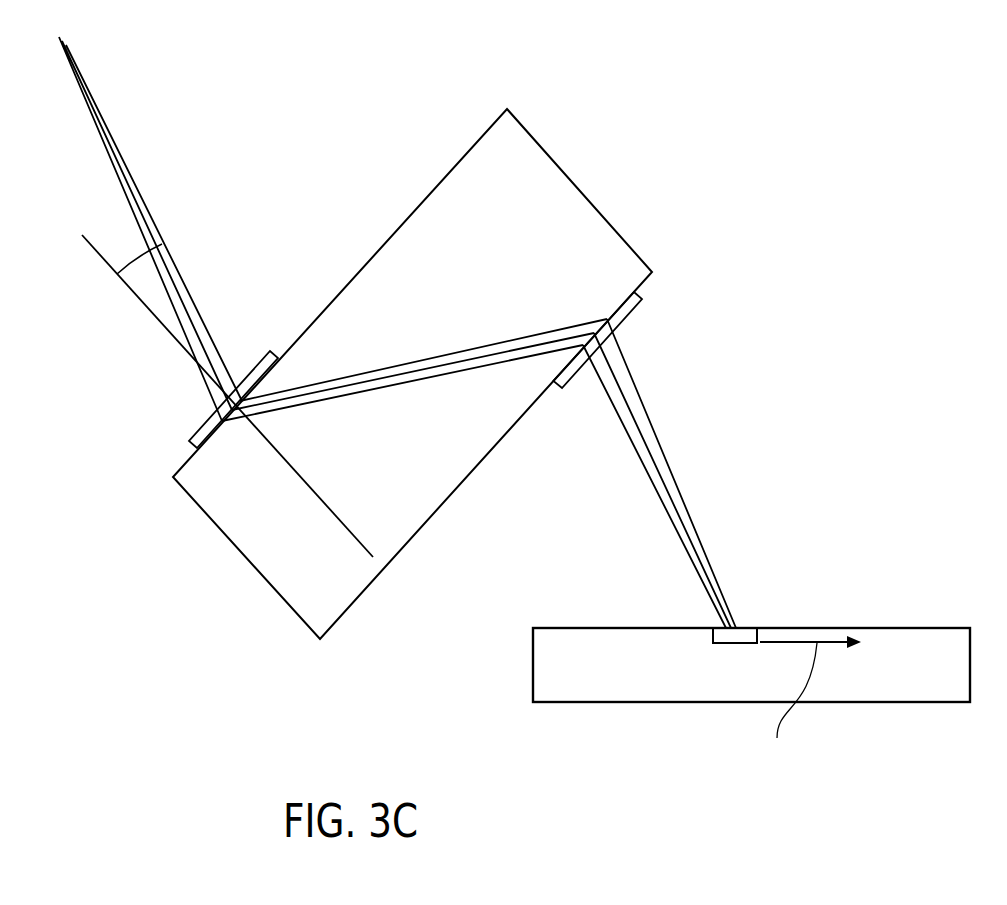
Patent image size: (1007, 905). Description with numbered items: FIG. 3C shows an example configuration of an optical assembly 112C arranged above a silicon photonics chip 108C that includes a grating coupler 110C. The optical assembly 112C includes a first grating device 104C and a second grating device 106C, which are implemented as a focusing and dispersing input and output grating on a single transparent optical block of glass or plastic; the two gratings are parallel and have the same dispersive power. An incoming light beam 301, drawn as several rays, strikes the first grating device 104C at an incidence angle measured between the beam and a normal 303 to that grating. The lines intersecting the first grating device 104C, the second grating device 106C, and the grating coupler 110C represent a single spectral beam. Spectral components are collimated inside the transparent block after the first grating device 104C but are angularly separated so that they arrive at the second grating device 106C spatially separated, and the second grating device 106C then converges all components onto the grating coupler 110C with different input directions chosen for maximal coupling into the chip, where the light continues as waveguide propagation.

The light beam 301 is at (95, 108).
The normal 303 is at (147, 308).
The first grating device 104C is at (190, 441).
The second grating device 106C is at (640, 293).
The silicon photonics chip 108C is at (600, 670).
The grating coupler 110C is at (742, 643).
The optical assembly 112C is at (663, 115).